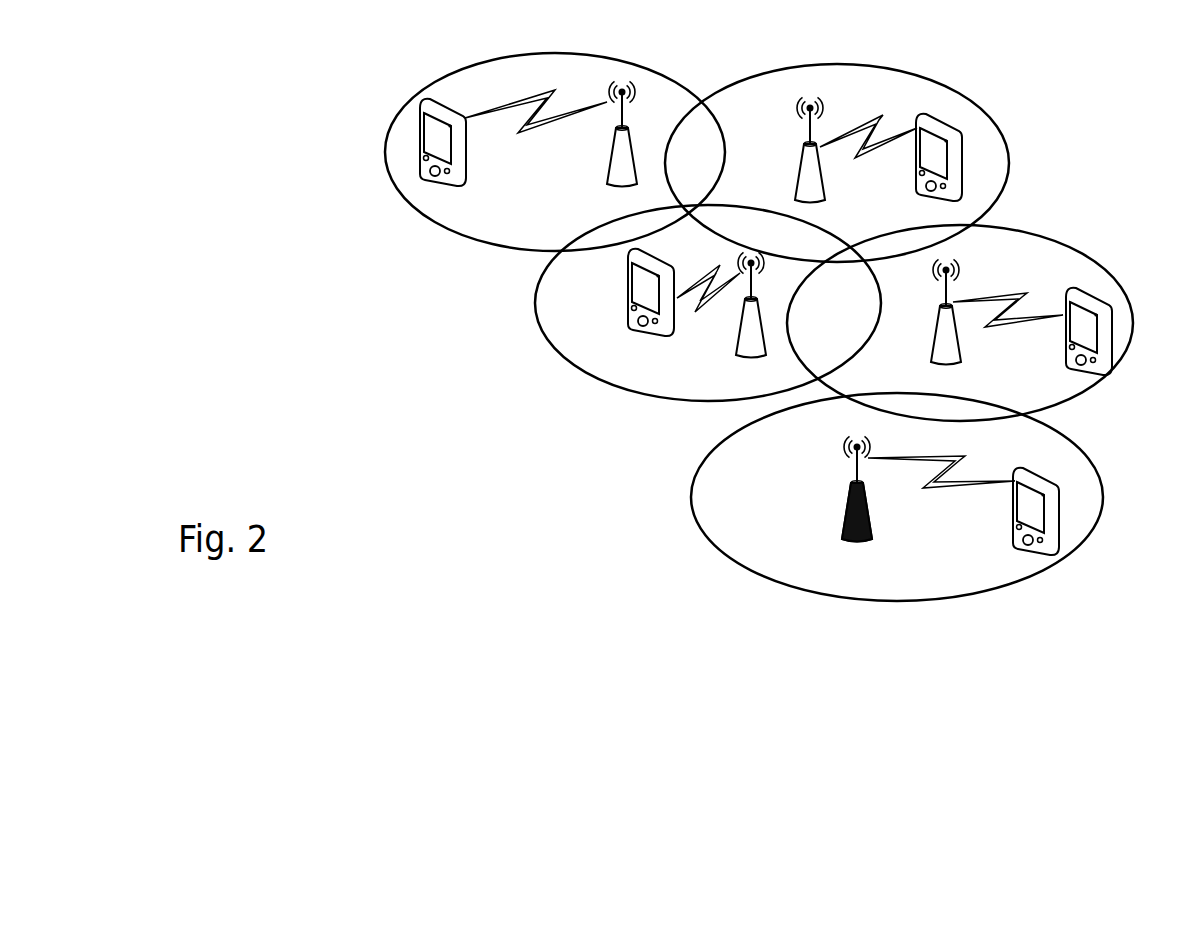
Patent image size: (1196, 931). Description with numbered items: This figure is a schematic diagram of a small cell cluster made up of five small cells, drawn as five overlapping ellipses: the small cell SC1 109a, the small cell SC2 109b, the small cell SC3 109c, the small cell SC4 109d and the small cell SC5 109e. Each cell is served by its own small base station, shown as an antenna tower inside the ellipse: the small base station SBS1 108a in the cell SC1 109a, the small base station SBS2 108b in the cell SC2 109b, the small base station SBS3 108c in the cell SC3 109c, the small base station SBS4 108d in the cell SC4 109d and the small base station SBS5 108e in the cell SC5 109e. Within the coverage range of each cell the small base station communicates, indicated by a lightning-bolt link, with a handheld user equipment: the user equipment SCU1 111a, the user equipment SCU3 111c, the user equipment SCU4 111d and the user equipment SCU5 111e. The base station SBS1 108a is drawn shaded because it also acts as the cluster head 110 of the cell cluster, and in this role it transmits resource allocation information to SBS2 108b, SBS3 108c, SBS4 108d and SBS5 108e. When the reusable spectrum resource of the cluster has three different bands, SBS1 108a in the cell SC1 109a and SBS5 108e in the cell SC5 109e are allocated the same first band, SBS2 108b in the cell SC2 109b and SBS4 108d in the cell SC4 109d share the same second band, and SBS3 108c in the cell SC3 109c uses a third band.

The small base station SBS1 108a is at (818, 501).
The small base station SBS2 108b is at (736, 331).
The small base station SBS3 108c is at (936, 317).
The small base station SBS4 108d is at (801, 157).
The small base station SBS5 108e is at (607, 171).
The small cell SC1 109a is at (820, 594).
The small cell SC2 109b is at (592, 377).
The small cell SC3 109c is at (1093, 261).
The small cell SC4 109d is at (993, 128).
The small cell SC5 109e is at (433, 220).
The cluster head 110 is at (845, 516).
The user equipment SCU1 111a is at (1011, 513).
The user equipment SCU3 111c is at (1064, 333).
The user equipment SCU4 111d is at (916, 188).
The user equipment SCU5 111e is at (468, 142).